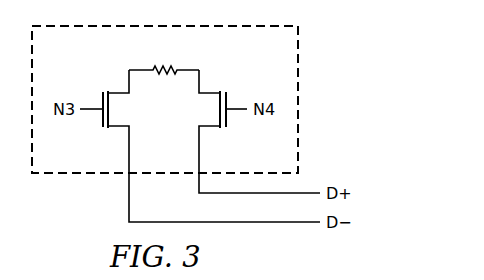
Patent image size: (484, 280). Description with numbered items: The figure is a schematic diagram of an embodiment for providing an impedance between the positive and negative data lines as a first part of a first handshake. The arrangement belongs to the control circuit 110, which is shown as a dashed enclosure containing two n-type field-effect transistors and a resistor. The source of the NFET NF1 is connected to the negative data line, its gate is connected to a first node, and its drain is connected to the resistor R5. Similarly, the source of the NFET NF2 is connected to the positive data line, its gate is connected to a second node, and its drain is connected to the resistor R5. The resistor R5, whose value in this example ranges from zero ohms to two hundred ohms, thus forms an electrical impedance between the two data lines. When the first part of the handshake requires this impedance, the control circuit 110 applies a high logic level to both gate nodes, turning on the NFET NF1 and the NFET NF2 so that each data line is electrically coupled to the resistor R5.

The control circuit 110 is at (319, 48).
The resistor R5 is at (164, 58).
The NFET NF1 is at (200, 146).
The NFET NF2 is at (259, 131).